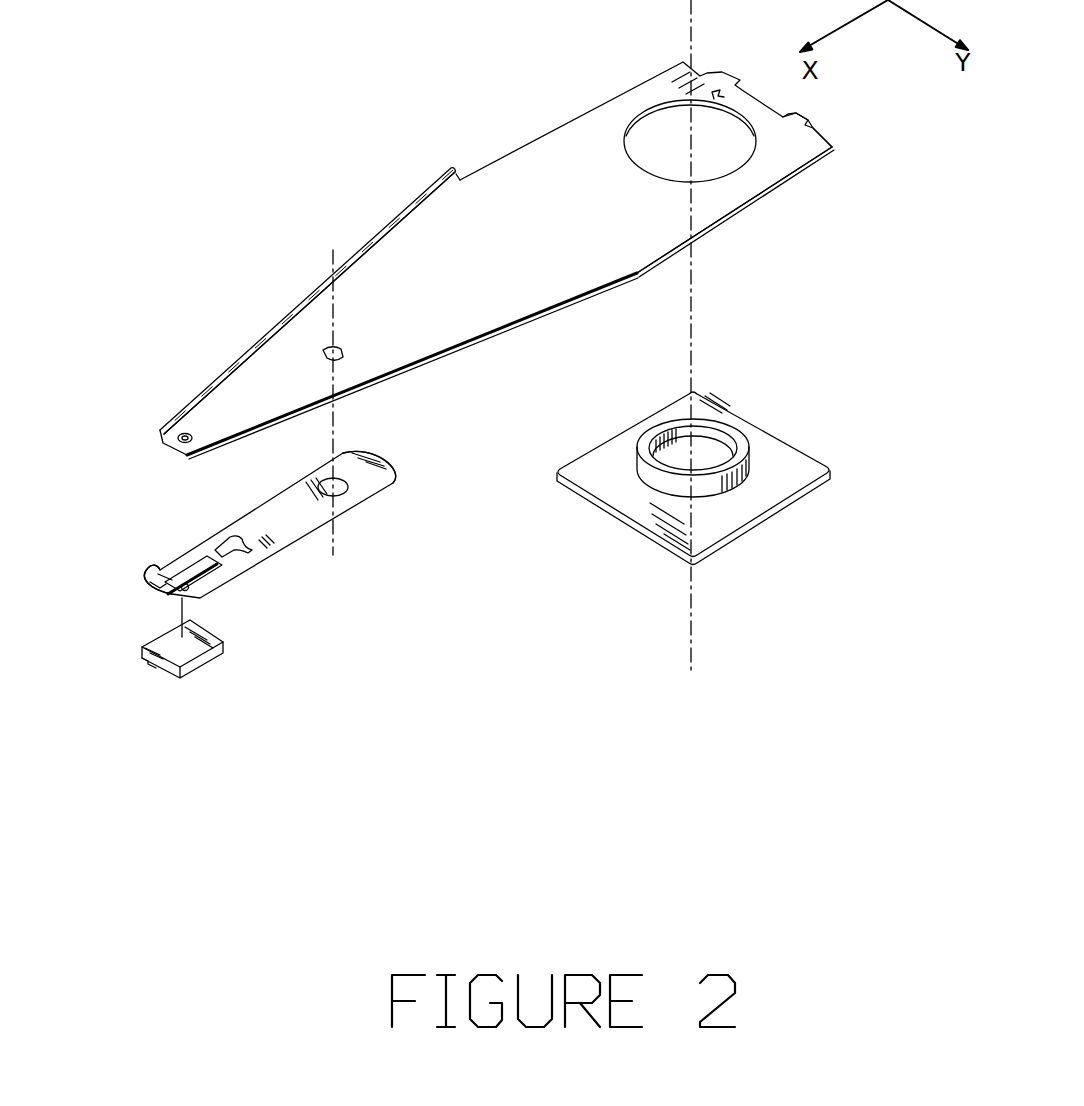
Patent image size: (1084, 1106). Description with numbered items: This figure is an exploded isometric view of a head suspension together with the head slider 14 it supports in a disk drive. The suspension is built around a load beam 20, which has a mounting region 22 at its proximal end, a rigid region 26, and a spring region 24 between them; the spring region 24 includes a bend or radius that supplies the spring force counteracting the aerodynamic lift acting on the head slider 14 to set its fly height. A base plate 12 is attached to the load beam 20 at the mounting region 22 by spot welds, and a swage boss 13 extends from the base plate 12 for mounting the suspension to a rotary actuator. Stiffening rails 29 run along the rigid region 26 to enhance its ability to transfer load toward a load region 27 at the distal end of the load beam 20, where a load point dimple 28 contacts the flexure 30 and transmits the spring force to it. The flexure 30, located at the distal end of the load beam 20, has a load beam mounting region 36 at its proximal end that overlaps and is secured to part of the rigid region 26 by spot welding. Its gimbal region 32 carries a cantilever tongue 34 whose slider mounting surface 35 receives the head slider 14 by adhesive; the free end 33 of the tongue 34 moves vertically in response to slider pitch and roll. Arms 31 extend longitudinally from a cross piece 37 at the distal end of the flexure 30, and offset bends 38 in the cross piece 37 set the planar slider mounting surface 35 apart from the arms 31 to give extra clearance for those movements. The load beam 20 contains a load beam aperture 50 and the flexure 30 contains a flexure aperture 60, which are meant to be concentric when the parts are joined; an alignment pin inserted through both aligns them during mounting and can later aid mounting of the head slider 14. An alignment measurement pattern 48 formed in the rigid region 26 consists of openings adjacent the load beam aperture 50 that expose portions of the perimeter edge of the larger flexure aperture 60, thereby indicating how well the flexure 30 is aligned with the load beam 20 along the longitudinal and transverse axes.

The base plate 12 is at (812, 473).
The swage boss 13 is at (722, 428).
The head slider 14 is at (203, 663).
The load beam 20 is at (513, 140).
The mounting region 22 is at (782, 165).
The spring region 24 is at (643, 242).
The rigid region 26 is at (423, 240).
The load region 27 is at (200, 412).
The load point dimple 28 is at (163, 440).
The stiffening rails 29 is at (363, 248).
The flexure 30 is at (300, 568).
The arms 31 is at (180, 568).
The gimbal region 32 is at (157, 567).
The free end 33 is at (215, 562).
The tongue 34 is at (185, 575).
The slider mounting surface 35 is at (170, 573).
The load beam mounting region 36 is at (367, 470).
The cross piece 37 is at (155, 582).
The offset bends 38 is at (183, 587).
The alignment measurement pattern 48 is at (367, 350).
The load beam aperture 50 is at (323, 350).
The flexure aperture 60 is at (345, 488).